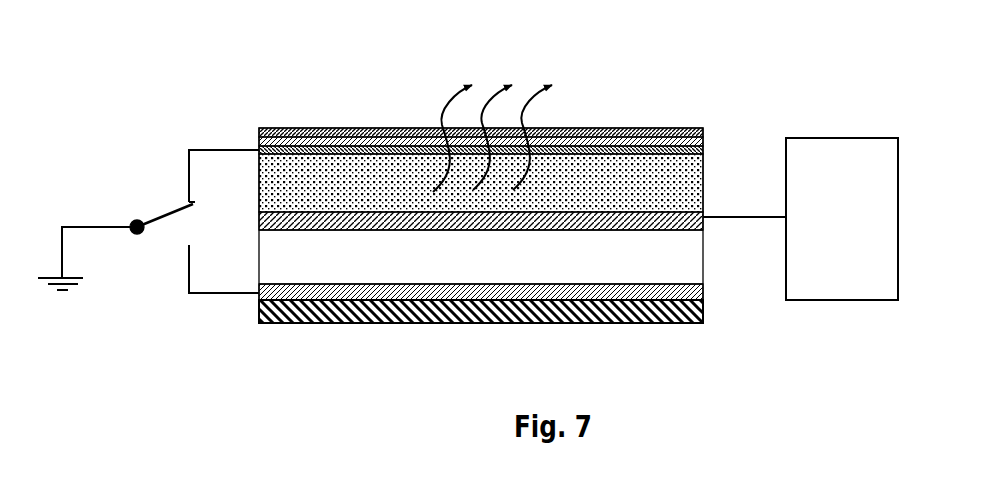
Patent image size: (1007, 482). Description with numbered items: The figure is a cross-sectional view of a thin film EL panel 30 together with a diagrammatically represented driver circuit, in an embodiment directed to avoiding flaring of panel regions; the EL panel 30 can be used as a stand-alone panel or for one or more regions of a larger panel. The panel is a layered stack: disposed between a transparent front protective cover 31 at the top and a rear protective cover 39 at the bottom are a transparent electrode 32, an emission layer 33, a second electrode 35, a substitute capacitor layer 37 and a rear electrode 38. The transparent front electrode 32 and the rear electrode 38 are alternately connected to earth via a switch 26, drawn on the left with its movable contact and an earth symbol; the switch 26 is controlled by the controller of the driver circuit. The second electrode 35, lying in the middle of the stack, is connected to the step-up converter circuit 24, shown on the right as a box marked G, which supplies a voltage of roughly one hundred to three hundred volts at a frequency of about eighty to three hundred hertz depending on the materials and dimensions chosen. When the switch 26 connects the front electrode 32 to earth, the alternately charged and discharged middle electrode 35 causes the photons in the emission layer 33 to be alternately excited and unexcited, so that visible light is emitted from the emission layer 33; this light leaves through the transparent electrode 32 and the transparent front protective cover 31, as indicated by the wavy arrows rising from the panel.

The step-up converter circuit 24 is at (850, 287).
The switch 26 is at (159, 253).
The thin film EL panel 30 is at (291, 89).
The transparent front protective cover 31 is at (613, 133).
The transparent electrode 32 is at (650, 145).
The emission layer 33 is at (703, 165).
The second electrode 35 is at (705, 216).
The substitute capacitor layer 37 is at (697, 262).
The rear electrode 38 is at (648, 322).
The rear protective cover 39 is at (573, 322).